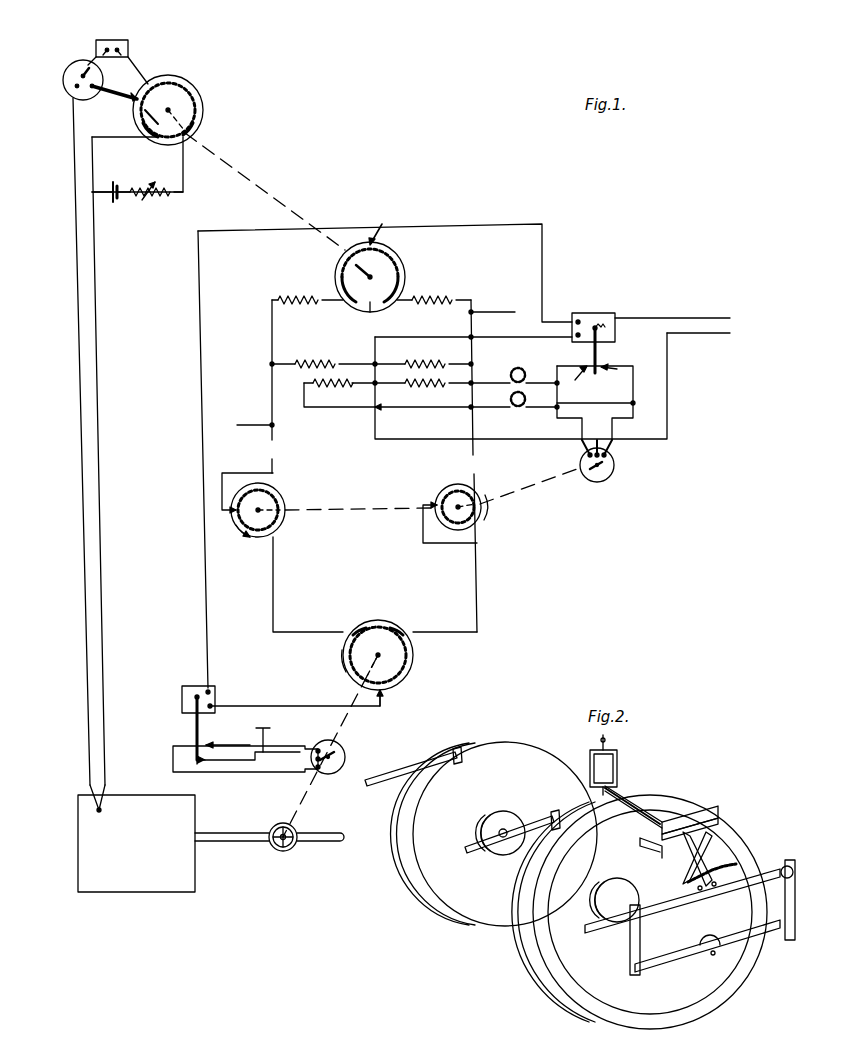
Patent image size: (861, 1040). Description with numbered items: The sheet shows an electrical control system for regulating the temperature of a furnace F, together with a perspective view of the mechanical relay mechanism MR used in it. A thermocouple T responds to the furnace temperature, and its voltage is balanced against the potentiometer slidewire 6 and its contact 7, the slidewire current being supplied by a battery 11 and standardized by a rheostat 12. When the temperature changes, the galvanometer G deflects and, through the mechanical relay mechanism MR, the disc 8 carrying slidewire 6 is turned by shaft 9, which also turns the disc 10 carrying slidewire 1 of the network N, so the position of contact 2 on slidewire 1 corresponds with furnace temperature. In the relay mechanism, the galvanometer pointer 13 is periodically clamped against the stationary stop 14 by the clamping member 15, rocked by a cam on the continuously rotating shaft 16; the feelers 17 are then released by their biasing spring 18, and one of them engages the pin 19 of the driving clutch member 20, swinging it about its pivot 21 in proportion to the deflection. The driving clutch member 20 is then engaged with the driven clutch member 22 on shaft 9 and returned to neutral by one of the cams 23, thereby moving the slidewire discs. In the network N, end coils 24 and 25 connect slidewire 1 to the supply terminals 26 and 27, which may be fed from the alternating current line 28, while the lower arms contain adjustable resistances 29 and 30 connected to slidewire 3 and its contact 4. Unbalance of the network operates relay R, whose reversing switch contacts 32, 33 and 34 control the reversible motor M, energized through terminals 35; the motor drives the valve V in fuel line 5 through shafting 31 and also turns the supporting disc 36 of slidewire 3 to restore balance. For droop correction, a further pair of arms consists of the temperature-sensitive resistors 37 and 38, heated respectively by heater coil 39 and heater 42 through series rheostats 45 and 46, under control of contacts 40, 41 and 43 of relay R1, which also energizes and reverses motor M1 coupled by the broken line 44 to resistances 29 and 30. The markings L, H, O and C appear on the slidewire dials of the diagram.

In FIG. 1, the slidewire 1 is at (392, 262).
In FIG. 2, the slidewire 1 is at (412, 838).
In FIG. 1, the contact 2 is at (381, 225).
In FIG. 2, the contact 2 is at (428, 764).
In FIG. 1, the slidewire 3 is at (405, 676).
In FIG. 1, the contact 4 is at (388, 702).
In FIG. 1, the fuel line 5 is at (252, 840).
In FIG. 1, the potentiometer slidewire 6 is at (192, 96).
In FIG. 2, the potentiometer slidewire 6 is at (520, 888).
In FIG. 1, the contact 7 is at (128, 96).
In FIG. 2, the contact 7 is at (525, 820).
In FIG. 1, the disc 8 is at (198, 114).
In FIG. 2, the disc 8 is at (630, 803).
In FIG. 1, the shaft 9 is at (135, 70).
In FIG. 2, the shaft 9 is at (492, 855).
In FIG. 1, the disc 10 is at (405, 282).
In FIG. 2, the disc 10 is at (520, 762).
In FIG. 1, the battery 11 is at (115, 203).
In FIG. 1, the rheostat 12 is at (150, 194).
In FIG. 2, the pointer 13 is at (642, 815).
In FIG. 2, the stationary stop 14 is at (718, 815).
In FIG. 2, the clamping member 15 is at (722, 830).
In FIG. 2, the shaft 16 is at (752, 878).
In FIG. 2, the feelers 17 is at (680, 852).
In FIG. 2, the biasing spring 18 is at (730, 868).
In FIG. 2, the pin 19 is at (706, 948).
In FIG. 2, the driving clutch member 20 is at (730, 945).
In FIG. 2, the pivot 21 is at (714, 958).
In FIG. 2, the driven clutch member 22 is at (770, 1012).
In FIG. 2, the cams 23 is at (785, 903).
In FIG. 1, the end coil 24 is at (300, 304).
In FIG. 1, the end coil 25 is at (432, 312).
In FIG. 1, the terminal 26 is at (270, 423).
In FIG. 1, the terminal 27 is at (474, 310).
In FIG. 1, the alternating current line 28 is at (680, 318).
In FIG. 1, the adjustable resistance 29 is at (270, 499).
In FIG. 1, the adjustable resistance 30 is at (445, 488).
In FIG. 1, the shafting and gearing 31 is at (332, 723).
In FIG. 1, the contact 32 is at (200, 724).
In FIG. 1, the contact 33 is at (188, 746).
In FIG. 1, the contact 34 is at (228, 738).
In FIG. 1, the terminals 35 is at (266, 730).
In FIG. 1, the supporting disc 36 is at (415, 657).
In FIG. 1, the resistor 37 is at (320, 362).
In FIG. 1, the resistor 38 is at (425, 362).
In FIG. 1, the heater coil 39 is at (320, 390).
In FIG. 1, the contact 40 is at (596, 402).
In FIG. 1, the contact 41 is at (600, 354).
In FIG. 1, the heater 42 is at (425, 393).
In FIG. 1, the contact 43 is at (573, 403).
In FIG. 1, the mechanical coupling 44 is at (400, 512).
In FIG. 1, the rheostat 45 is at (520, 368).
In FIG. 1, the rheostat 46 is at (510, 402).
In FIG. 1, the galvanometer G is at (63, 80).
In FIG. 2, the galvanometer G is at (618, 768).
In FIG. 1, the mechanical relay mechanism MR is at (115, 40).
In FIG. 2, the mechanical relay mechanism MR is at (515, 945).
In FIG. 1, the relay R1 is at (588, 315).
In FIG. 1, the reversible motor M1 is at (612, 472).
In FIG. 1, the low contact L is at (356, 291).
In FIG. 1, the high contact H is at (382, 291).
In FIG. 1, the network N is at (252, 350).
In FIG. 1, the open contact O is at (358, 628).
In FIG. 1, the close contact C is at (396, 628).
In FIG. 1, the relay R is at (182, 694).
In FIG. 1, the thermocouple T is at (108, 797).
In FIG. 1, the furnace F is at (180, 820).
In FIG. 1, the reversible motor M is at (332, 773).
In FIG. 1, the valve V is at (285, 852).